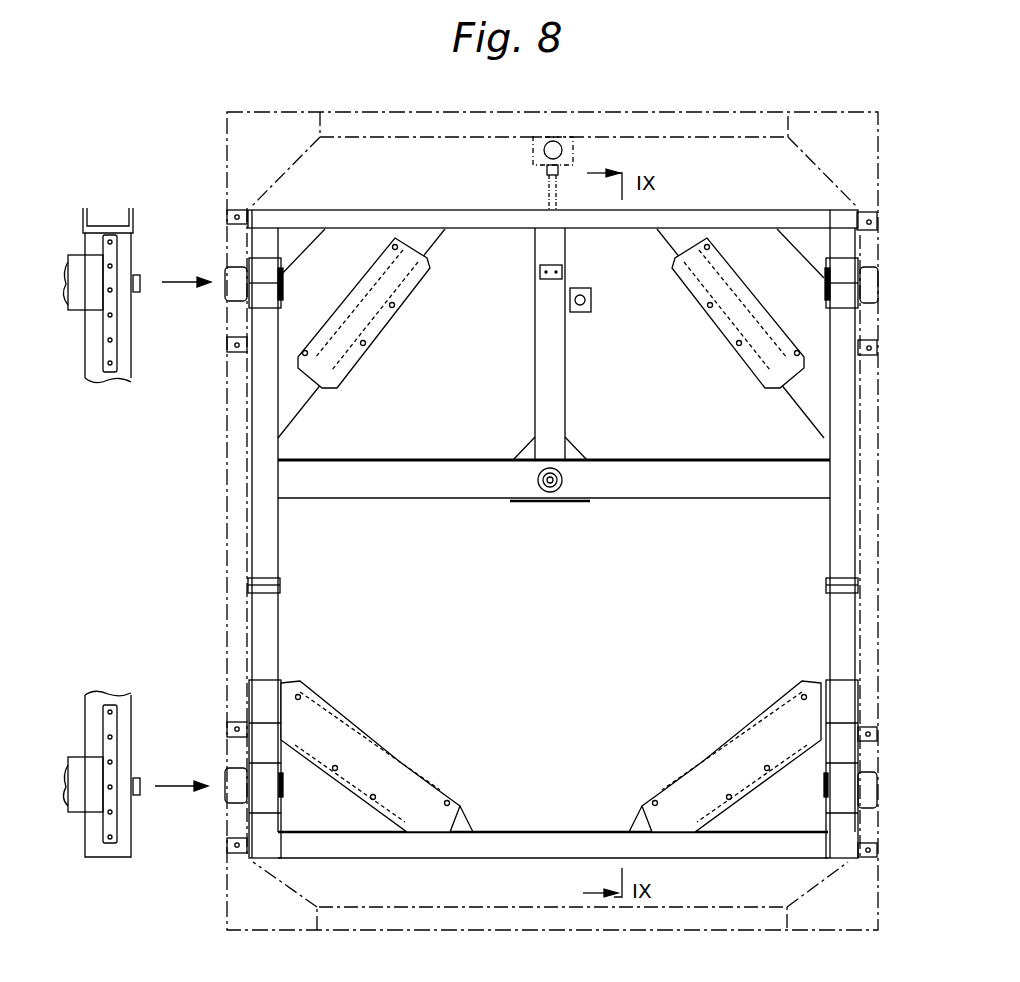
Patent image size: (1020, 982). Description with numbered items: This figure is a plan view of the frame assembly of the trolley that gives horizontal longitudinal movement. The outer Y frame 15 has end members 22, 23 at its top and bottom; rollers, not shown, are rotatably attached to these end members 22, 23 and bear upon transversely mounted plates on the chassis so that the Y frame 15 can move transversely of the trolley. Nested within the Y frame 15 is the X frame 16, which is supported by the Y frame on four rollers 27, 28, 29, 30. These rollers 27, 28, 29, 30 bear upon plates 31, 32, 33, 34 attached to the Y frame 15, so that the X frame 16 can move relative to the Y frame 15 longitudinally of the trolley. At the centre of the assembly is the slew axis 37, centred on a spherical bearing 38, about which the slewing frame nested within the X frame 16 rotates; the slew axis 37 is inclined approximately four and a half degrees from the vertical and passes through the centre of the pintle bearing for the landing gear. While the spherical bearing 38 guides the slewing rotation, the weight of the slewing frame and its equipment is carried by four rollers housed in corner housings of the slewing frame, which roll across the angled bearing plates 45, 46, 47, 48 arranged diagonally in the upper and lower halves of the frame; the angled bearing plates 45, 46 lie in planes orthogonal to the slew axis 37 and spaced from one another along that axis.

The Y frame 15 is at (232, 522).
The X frame 16 is at (270, 553).
The end member 22 is at (713, 118).
The end member 23 is at (478, 918).
The roller 27 is at (236, 275).
The roller 28 is at (828, 303).
The roller 29 is at (235, 795).
The roller 30 is at (865, 797).
The plate 31 is at (232, 330).
The plate 32 is at (855, 233).
The plate 33 is at (240, 748).
The plate 34 is at (860, 740).
The slew axis 37 is at (568, 468).
The spherical bearing 38 is at (562, 492).
The angled bearing plate 45 is at (413, 285).
The angled bearing plate 46 is at (697, 283).
The angled bearing plate 47 is at (360, 755).
The angled bearing plate 48 is at (752, 757).